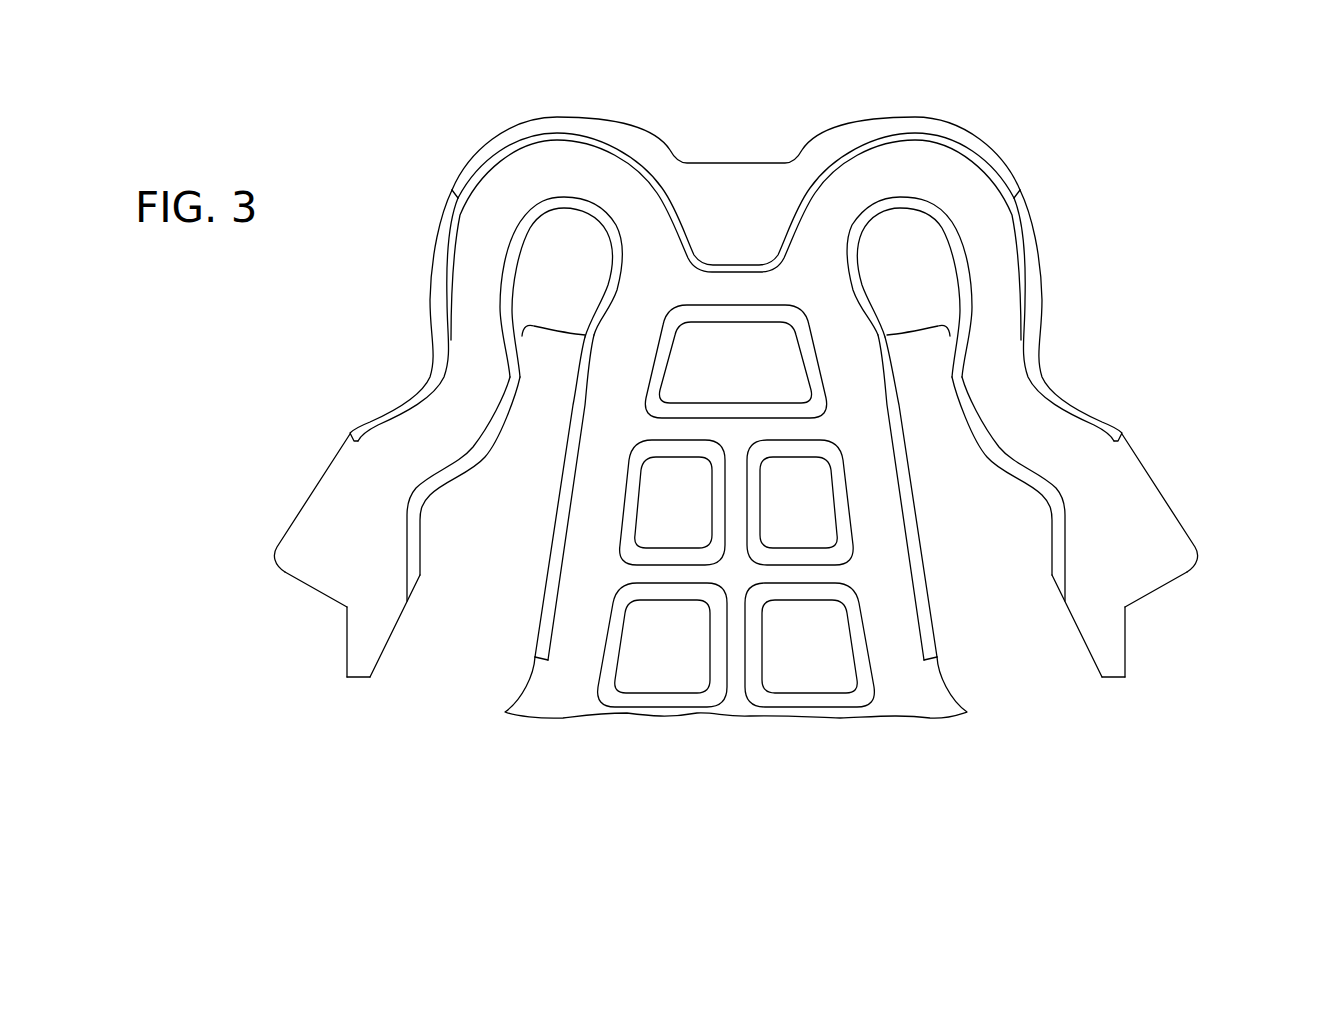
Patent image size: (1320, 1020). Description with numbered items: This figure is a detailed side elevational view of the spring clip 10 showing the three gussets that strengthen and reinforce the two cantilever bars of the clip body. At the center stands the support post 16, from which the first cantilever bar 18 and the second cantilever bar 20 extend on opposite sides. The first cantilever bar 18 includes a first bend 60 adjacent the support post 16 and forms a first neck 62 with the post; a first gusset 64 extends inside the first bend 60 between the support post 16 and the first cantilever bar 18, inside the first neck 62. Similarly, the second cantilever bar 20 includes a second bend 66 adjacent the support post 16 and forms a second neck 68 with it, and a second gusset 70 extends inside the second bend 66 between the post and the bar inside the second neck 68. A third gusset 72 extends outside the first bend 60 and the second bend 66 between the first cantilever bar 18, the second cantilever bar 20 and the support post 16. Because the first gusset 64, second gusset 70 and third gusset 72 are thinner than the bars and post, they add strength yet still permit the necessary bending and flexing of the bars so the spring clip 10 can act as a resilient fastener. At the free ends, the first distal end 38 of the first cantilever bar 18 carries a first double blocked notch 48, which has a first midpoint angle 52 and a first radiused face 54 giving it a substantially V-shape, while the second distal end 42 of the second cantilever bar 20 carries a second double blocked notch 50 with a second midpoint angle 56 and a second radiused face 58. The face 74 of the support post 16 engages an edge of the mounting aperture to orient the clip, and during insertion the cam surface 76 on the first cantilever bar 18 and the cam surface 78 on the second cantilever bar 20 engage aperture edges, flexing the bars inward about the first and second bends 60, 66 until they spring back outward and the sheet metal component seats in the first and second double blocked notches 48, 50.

The spring clip 10 is at (1007, 100).
The support post 16 is at (733, 688).
The first cantilever bar 18 is at (460, 277).
The second cantilever bar 20 is at (1027, 280).
The first distal end 38 is at (360, 680).
The second distal end 42 is at (1113, 680).
The first double blocked notch 48 is at (280, 648).
The second double blocked notch 50 is at (1172, 620).
The first midpoint angle 52 is at (343, 613).
The first radiused face 54 is at (297, 577).
The second midpoint angle 56 is at (1124, 607).
The second radiused face 58 is at (1167, 580).
The first bend 60 is at (584, 207).
The first neck 62 is at (540, 370).
The first gusset 64 is at (548, 272).
The second bend 66 is at (888, 207).
The second neck 68 is at (920, 370).
The second gusset 70 is at (920, 280).
The third gusset 72 is at (738, 207).
The face 74 is at (603, 593).
The cam surface 76 is at (300, 512).
The cam surface 78 is at (1160, 487).